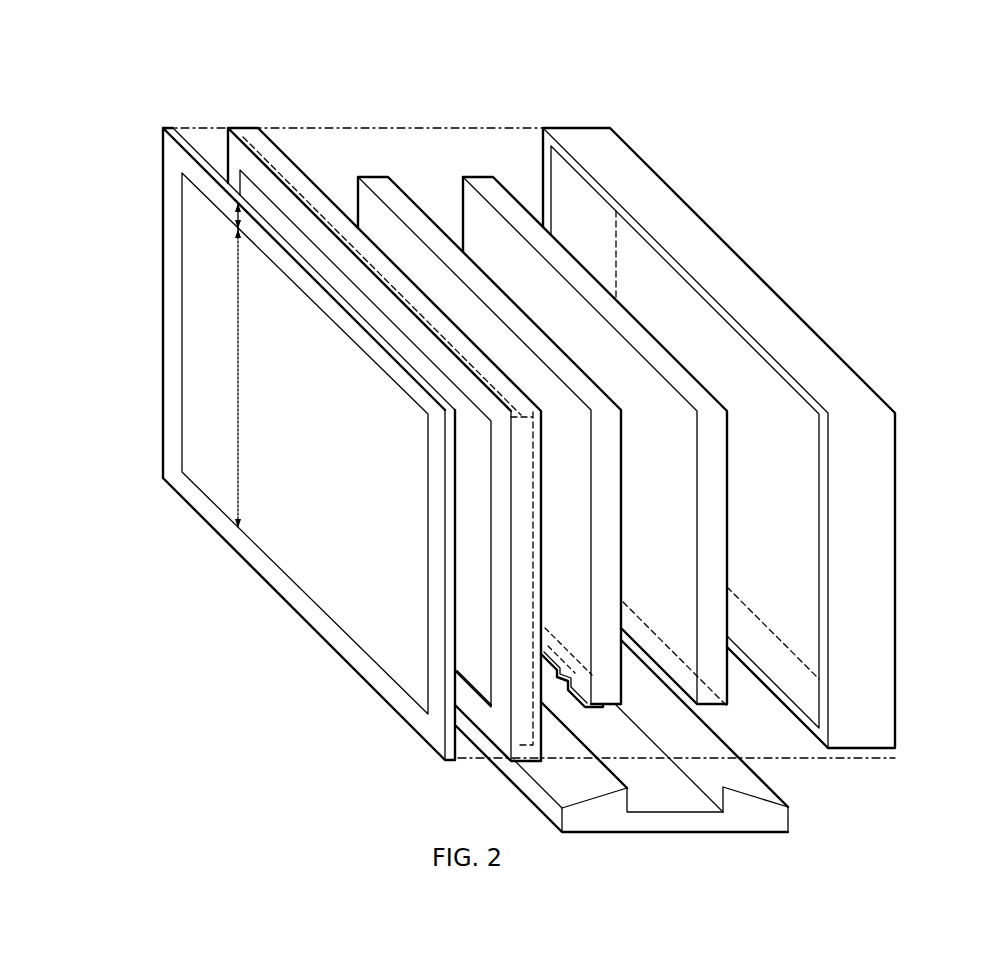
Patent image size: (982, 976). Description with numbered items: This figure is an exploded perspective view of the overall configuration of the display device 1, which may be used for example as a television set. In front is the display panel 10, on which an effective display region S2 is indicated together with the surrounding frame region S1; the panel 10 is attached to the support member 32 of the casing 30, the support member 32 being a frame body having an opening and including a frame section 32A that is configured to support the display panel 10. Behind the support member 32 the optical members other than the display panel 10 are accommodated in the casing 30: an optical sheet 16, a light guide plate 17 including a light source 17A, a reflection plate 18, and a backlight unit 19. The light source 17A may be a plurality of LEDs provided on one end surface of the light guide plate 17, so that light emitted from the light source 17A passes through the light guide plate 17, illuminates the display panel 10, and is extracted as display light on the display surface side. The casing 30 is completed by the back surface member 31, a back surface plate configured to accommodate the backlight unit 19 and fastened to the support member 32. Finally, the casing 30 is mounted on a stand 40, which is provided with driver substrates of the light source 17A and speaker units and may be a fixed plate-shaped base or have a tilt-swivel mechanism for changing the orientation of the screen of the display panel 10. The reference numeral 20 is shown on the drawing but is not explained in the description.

The display device 1 is at (789, 172).
The display panel 10 is at (210, 400).
The front frame 20 is at (283, 419).
The frame region S1 is at (236, 218).
The effective display region S2 is at (236, 330).
The casing 30 is at (607, 60).
The back surface member 31 is at (582, 138).
The support member 32 is at (357, 412).
The frame section 32A is at (248, 133).
The optical sheet 16 is at (652, 404).
The light guide plate 17 is at (652, 404).
The reflection plate 18 is at (652, 404).
The light source 17A is at (600, 708).
The backlight unit 19 is at (480, 183).
The stand 40 is at (781, 818).